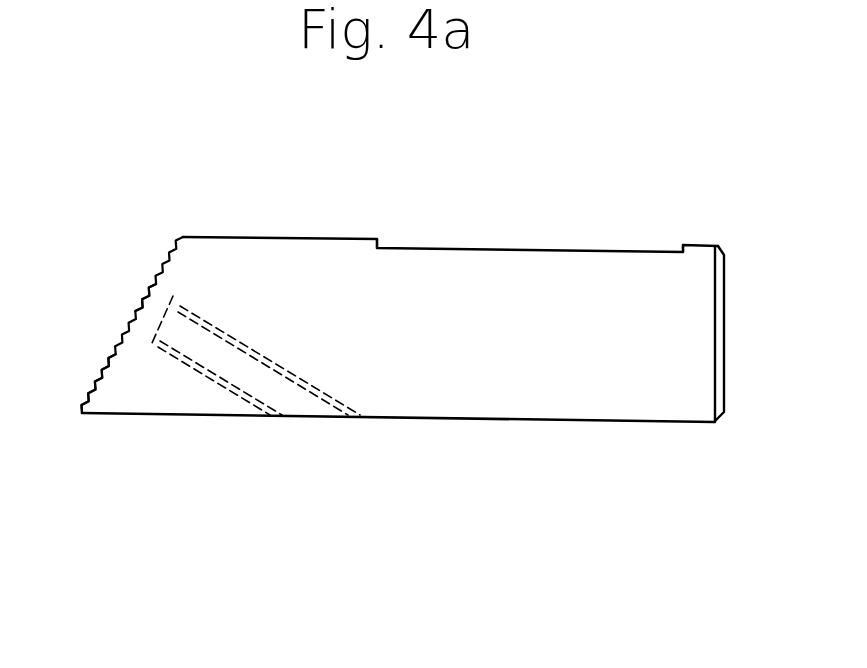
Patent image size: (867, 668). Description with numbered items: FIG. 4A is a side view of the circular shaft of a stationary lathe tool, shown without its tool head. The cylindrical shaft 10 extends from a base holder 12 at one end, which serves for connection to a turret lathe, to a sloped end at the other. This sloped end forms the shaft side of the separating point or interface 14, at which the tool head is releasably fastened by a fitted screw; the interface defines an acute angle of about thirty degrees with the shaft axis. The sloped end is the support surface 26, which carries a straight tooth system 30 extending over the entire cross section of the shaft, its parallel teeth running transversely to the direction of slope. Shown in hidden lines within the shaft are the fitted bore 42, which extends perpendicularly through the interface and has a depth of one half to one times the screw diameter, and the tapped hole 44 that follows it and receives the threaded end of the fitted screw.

The cylindrical shaft 10 is at (297, 268).
The base holder 12 is at (665, 312).
The separating point or interface 14 is at (166, 240).
The support surface 26 is at (102, 372).
The straight tooth system 30 is at (140, 307).
The fitted bore 42 is at (145, 327).
The tapped hole 44 is at (202, 370).